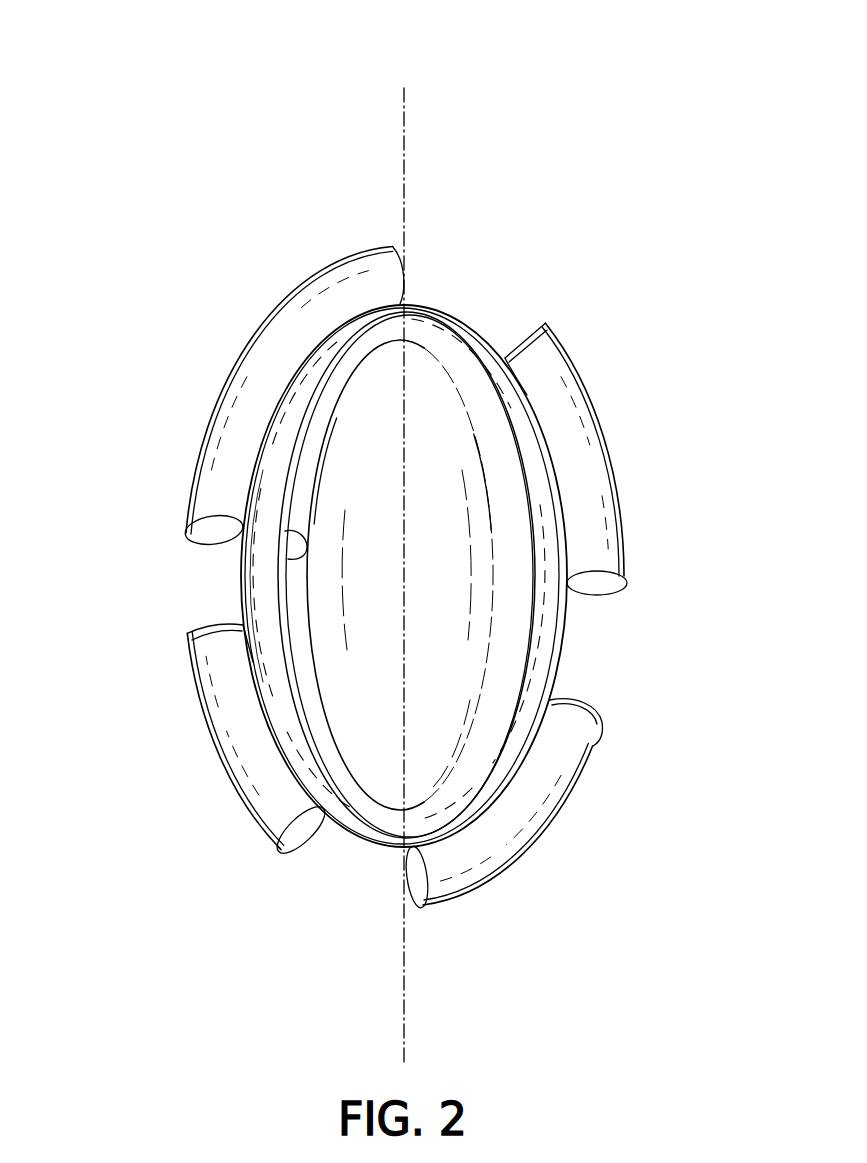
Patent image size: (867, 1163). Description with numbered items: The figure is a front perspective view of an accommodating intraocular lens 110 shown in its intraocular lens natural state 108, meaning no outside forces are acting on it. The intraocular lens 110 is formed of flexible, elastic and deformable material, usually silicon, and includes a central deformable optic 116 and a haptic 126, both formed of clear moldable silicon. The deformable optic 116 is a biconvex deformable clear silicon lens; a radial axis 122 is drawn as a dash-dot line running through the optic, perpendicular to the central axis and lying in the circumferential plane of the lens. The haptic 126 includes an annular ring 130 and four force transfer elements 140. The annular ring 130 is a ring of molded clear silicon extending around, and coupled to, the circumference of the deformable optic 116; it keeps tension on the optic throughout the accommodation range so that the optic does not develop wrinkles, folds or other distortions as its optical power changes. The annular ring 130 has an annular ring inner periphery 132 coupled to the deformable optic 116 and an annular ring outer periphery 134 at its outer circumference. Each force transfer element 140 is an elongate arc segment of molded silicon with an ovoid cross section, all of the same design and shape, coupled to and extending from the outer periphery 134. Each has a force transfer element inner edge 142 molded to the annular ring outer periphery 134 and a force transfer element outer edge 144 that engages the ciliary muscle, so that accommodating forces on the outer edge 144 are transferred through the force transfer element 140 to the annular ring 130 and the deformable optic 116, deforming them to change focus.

The intraocular lens natural state 108 is at (658, 790).
The intraocular lens 110 is at (404, 78).
The deformable optic 116 is at (437, 392).
The radial axis 122 is at (406, 156).
The haptic 126 is at (460, 271).
The annular ring 130 is at (548, 637).
The annular ring inner periphery 132 is at (306, 548).
The annular ring outer periphery 134 is at (243, 600).
The force transfer element 140 is at (260, 378).
The force transfer element inner edge 142 is at (255, 468).
The force transfer element outer edge 144 is at (297, 290).